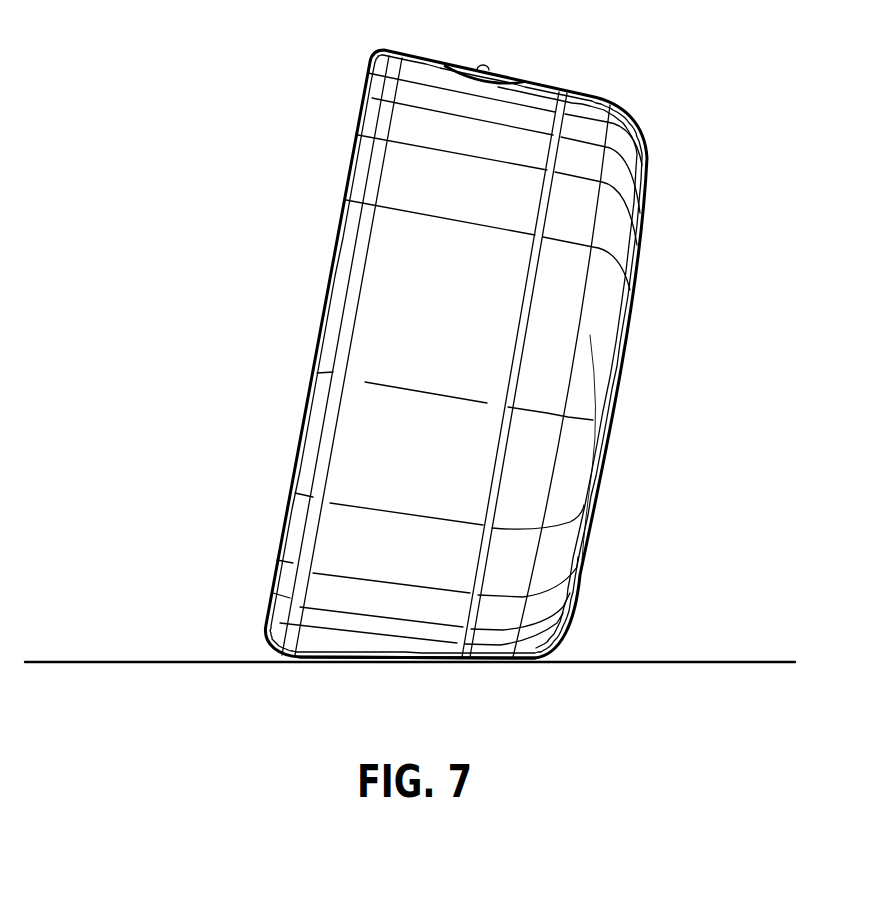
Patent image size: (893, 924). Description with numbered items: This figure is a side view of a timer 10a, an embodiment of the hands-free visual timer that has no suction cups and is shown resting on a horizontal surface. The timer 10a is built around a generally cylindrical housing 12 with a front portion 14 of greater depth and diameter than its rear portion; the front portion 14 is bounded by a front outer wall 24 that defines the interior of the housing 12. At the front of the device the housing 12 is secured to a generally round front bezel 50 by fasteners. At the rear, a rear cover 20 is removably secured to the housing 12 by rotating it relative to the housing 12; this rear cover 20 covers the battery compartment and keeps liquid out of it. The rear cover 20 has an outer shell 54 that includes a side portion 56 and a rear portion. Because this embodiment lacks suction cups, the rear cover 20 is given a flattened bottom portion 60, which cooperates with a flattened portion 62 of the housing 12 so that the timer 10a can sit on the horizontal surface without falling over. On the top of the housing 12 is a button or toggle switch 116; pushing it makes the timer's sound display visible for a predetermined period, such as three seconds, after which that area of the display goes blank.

The timer 10a is at (247, 61).
The housing 12 is at (534, 74).
The front portion 14 is at (413, 52).
The rear cover 20 is at (623, 104).
The front outer wall 24 is at (450, 337).
The front bezel 50 is at (370, 46).
The outer shell 54 is at (587, 323).
The side portion 56 is at (576, 92).
The flattened bottom portion 60 is at (497, 664).
The flattened portion 62 is at (423, 664).
The toggle switch 116 is at (483, 63).